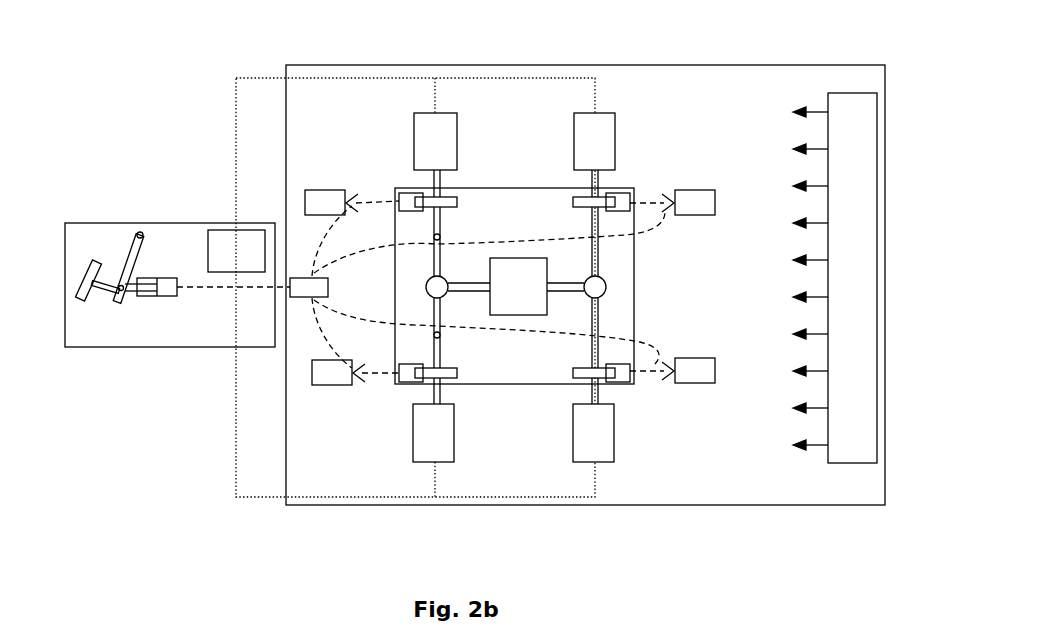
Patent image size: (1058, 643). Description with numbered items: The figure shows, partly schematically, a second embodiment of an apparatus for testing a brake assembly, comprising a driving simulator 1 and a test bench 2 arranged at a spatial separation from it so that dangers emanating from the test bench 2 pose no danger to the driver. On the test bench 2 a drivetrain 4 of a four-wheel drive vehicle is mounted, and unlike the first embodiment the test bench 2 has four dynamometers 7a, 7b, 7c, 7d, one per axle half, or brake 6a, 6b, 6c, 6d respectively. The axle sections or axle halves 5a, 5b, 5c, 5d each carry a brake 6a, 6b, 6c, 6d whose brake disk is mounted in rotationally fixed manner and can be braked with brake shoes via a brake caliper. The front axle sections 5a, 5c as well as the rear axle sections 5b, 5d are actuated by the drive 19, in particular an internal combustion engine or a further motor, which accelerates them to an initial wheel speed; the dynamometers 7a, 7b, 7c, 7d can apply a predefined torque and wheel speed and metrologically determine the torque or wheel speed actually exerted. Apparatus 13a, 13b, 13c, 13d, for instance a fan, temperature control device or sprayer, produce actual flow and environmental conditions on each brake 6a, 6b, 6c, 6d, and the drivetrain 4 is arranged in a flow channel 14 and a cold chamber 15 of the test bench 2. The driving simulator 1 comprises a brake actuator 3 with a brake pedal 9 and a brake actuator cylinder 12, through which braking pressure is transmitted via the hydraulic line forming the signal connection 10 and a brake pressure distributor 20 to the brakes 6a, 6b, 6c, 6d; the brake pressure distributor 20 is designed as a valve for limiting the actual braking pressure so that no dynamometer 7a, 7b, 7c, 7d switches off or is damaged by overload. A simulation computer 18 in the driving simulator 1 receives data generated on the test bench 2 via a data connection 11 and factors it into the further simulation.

The driving simulator 1 is at (83, 248).
The test bench 2 is at (553, 56).
The brake actuator 3 is at (132, 333).
The drivetrain 4 is at (622, 250).
The axle section 5a is at (433, 183).
The axle section 5b is at (598, 258).
The axle section 5c is at (433, 392).
The axle section 5d is at (598, 315).
The brake 6a is at (455, 190).
The brake 6b is at (641, 180).
The brake 6c is at (452, 390).
The brake 6d is at (645, 389).
The dynamometer 7a is at (440, 147).
The dynamometer 7b is at (597, 150).
The dynamometer 7c is at (434, 437).
The dynamometer 7d is at (592, 430).
The brake pedal 9 is at (78, 288).
The signal connection 10 is at (345, 220).
The data connection 11 is at (236, 150).
The brake actuator cylinder 12 is at (163, 285).
The apparatus for producing flow conditions 13a is at (314, 211).
The apparatus for producing flow conditions 13b is at (684, 211).
The apparatus for producing flow conditions 13c is at (321, 381).
The apparatus for producing flow conditions 13d is at (684, 379).
The flow channel 14 is at (870, 152).
The cold chamber 15 is at (737, 460).
The simulation computer 18 is at (226, 262).
The drive 19 is at (508, 297).
The brake pressure distributor 20 is at (308, 290).